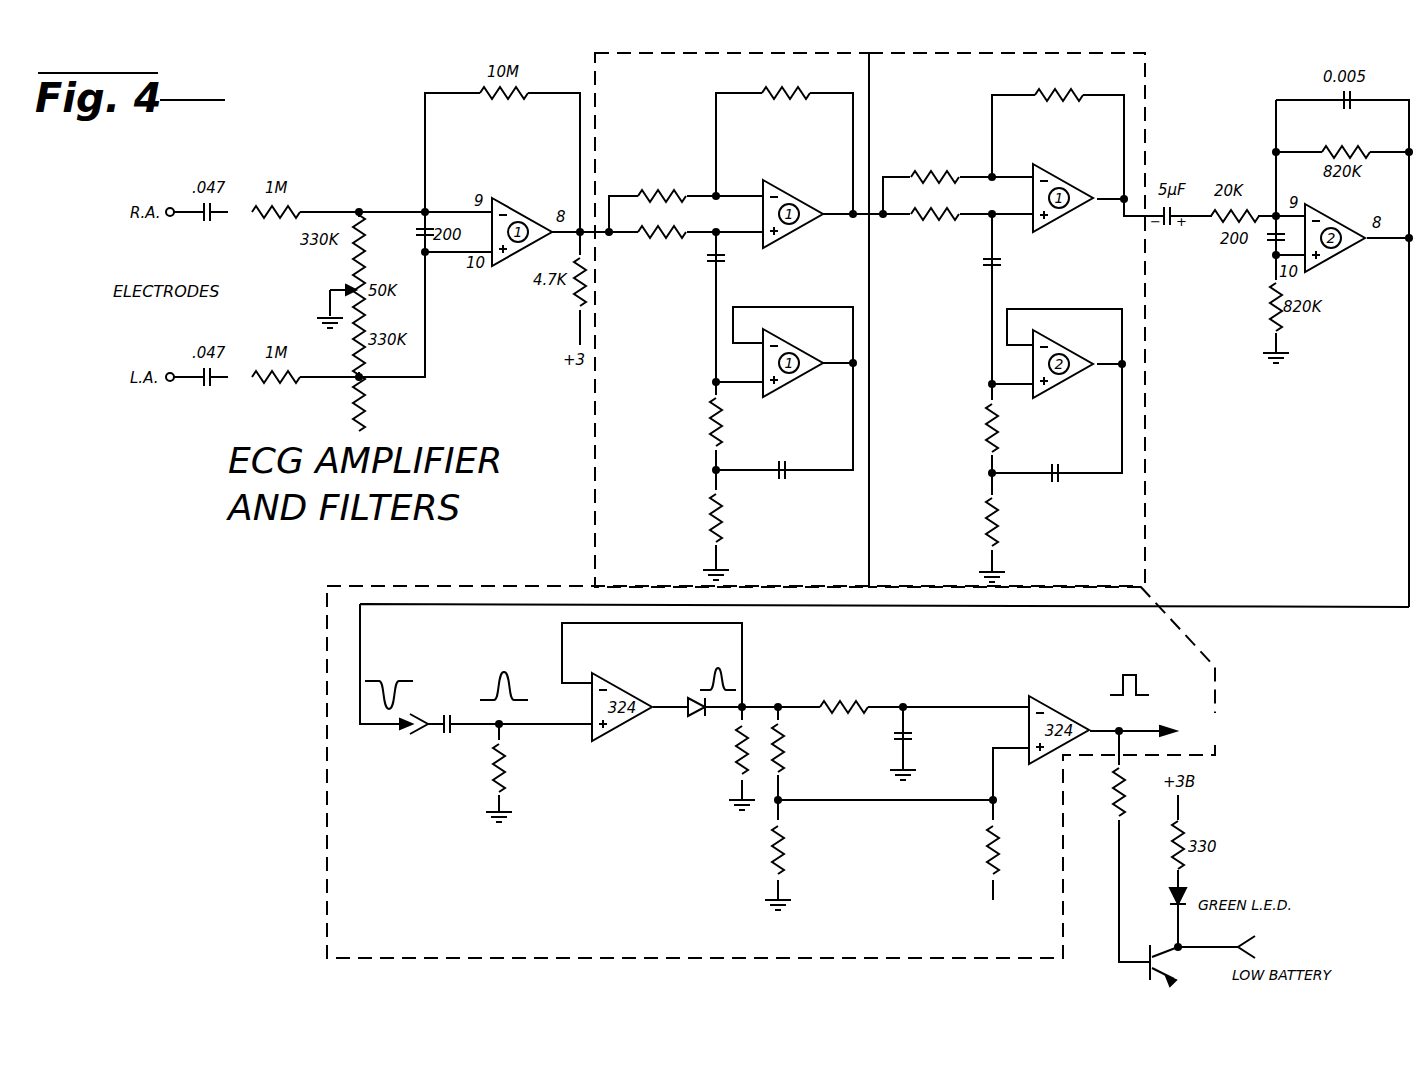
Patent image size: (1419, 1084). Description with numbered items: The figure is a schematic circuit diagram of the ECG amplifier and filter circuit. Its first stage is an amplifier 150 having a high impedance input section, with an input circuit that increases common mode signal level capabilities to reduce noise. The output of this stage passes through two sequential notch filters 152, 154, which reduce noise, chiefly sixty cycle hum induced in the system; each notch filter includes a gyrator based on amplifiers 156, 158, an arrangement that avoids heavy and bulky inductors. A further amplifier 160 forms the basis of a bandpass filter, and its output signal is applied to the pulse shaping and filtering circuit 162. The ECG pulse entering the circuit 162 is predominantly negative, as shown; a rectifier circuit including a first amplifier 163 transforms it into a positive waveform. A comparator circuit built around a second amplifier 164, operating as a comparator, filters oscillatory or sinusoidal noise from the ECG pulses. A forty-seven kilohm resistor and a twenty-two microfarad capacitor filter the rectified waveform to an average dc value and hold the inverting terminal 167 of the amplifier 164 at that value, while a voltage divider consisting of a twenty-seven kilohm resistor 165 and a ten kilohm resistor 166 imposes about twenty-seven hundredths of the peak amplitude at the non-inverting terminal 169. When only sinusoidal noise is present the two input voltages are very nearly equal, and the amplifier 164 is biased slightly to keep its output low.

The amplifier 150 is at (512, 262).
The notch filter 152 is at (705, 320).
The notch filter 154 is at (1031, 320).
The amplifier 156 is at (793, 372).
The amplifier 158 is at (1060, 372).
The amplifier 160 is at (1345, 258).
The pulse shaping and filtering circuit 162 is at (862, 774).
The first amplifier 163 is at (620, 727).
The second amplifier 164 is at (1064, 708).
The 27k ohm resistor 165 is at (783, 770).
The 10k ohm resistor 166 is at (775, 847).
The inverting terminal 167 is at (1008, 707).
The non-inverting terminal 169 is at (1008, 750).